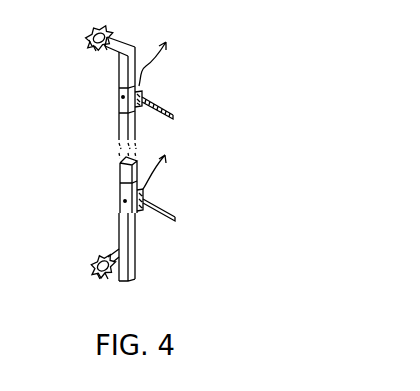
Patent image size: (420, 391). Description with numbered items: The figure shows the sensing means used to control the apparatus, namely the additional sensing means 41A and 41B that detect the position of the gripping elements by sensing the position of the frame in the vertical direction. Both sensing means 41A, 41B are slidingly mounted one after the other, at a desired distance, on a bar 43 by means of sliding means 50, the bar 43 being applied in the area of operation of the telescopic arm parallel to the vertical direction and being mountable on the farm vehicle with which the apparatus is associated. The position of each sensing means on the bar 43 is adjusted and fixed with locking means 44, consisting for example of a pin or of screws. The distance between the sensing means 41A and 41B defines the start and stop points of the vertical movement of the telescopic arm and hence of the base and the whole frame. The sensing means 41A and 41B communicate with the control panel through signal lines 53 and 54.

The bar 43 is at (137, 251).
The sliding means 50 is at (119, 108).
The locking means 44 is at (121, 96).
The sensing means 41A is at (143, 196).
The sensing means 41B is at (142, 93).
The direction of movement 53 is at (164, 46).
The direction of movement 54 is at (165, 157).